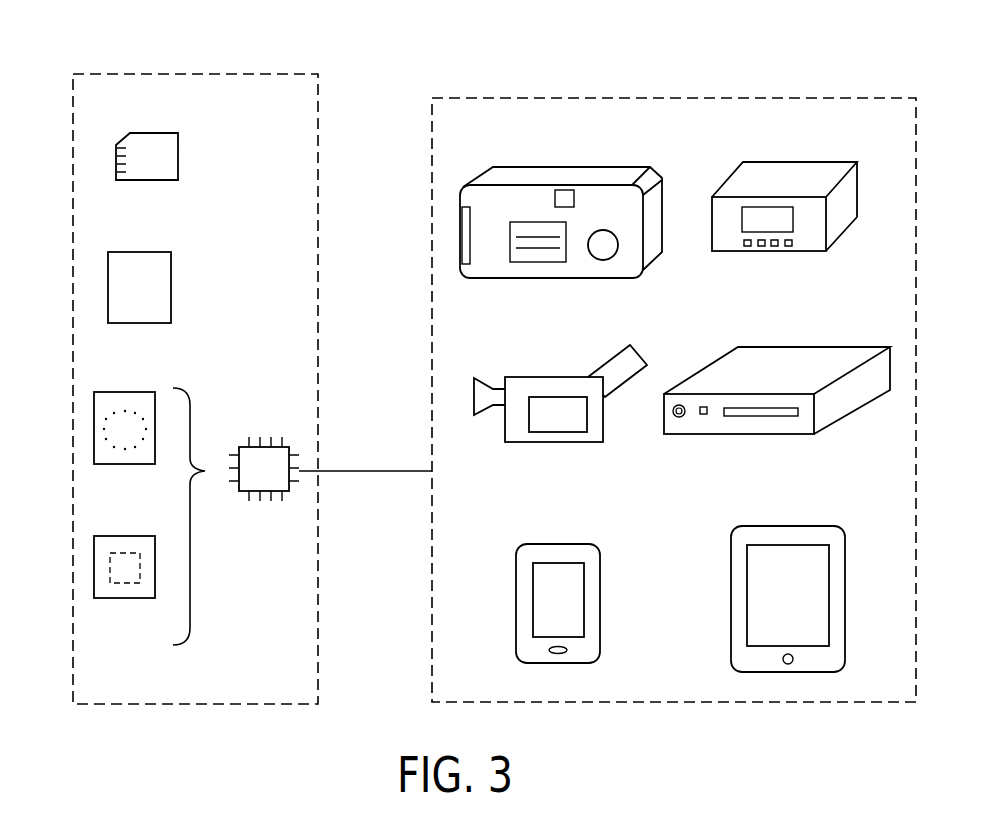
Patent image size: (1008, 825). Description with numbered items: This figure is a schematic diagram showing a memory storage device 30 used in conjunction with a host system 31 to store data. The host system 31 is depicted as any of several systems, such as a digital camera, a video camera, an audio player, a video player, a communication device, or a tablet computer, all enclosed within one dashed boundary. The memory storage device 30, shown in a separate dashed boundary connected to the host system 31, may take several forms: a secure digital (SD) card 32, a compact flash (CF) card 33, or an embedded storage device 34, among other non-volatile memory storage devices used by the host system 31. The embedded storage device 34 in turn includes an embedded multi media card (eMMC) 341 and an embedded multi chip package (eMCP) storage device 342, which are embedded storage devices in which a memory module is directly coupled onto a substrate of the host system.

The memory storage device 30 is at (196, 72).
The host system 31 is at (598, 95).
The secure digital (SD) card 32 is at (117, 161).
The compact flash (CF) card 33 is at (108, 287).
The embedded storage device 34 is at (263, 447).
The embedded multi media card (eMMC) 341 is at (94, 424).
The embedded multi chip package (eMCP) storage device 342 is at (94, 565).